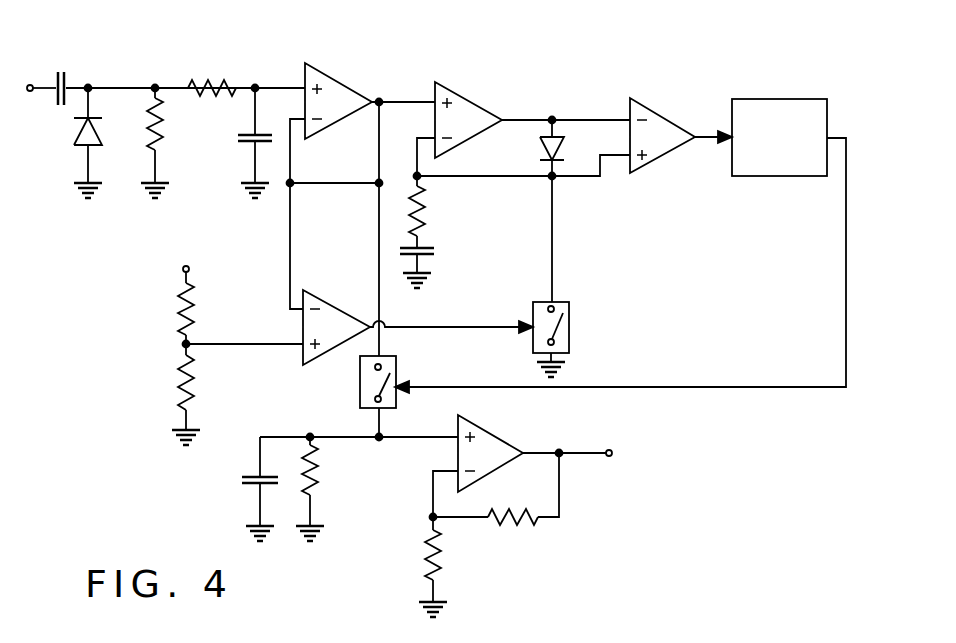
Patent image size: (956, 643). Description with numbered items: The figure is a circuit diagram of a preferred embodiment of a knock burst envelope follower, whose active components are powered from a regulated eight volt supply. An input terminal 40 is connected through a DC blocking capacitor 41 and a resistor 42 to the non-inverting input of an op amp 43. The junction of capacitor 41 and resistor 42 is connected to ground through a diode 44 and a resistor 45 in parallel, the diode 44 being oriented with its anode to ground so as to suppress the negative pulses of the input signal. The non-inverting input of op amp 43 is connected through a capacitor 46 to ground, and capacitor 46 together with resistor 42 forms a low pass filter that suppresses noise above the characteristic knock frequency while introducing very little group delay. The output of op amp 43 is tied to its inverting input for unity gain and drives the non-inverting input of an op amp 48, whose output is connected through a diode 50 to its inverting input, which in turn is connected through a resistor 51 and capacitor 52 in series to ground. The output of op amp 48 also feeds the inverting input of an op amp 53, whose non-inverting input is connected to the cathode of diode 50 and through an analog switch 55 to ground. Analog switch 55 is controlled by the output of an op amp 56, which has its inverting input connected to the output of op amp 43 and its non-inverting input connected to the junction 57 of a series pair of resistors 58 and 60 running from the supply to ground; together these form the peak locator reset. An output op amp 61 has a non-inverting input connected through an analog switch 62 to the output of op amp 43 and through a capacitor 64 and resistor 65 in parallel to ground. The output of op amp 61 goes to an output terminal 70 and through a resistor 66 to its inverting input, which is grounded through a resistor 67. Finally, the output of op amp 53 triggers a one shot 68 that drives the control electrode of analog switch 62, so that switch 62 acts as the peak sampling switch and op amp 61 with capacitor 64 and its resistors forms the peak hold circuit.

The input terminal 40 is at (31, 85).
The DC blocking capacitor 41 is at (67, 82).
The resistor 42 is at (210, 84).
The op amp 43 is at (340, 92).
The diode 44 is at (74, 133).
The resistor 45 is at (160, 128).
The capacitor 46 is at (250, 143).
The op amp 48 is at (465, 108).
The diode 50 is at (545, 150).
The resistor 51 is at (423, 230).
The capacitor 52 is at (428, 255).
The op amp 53 is at (650, 112).
The analog switch 55 is at (558, 303).
The op amp 56 is at (336, 310).
The junction 57 is at (182, 344).
The resistor 58 is at (180, 300).
The resistor 60 is at (180, 385).
The output op amp 61 is at (490, 440).
The analog switch 62 is at (394, 372).
The capacitor 64 is at (250, 475).
The resistor 65 is at (317, 485).
The resistor 66 is at (515, 521).
The resistor 67 is at (440, 572).
The one shot 68 is at (800, 108).
The output terminal 70 is at (611, 450).